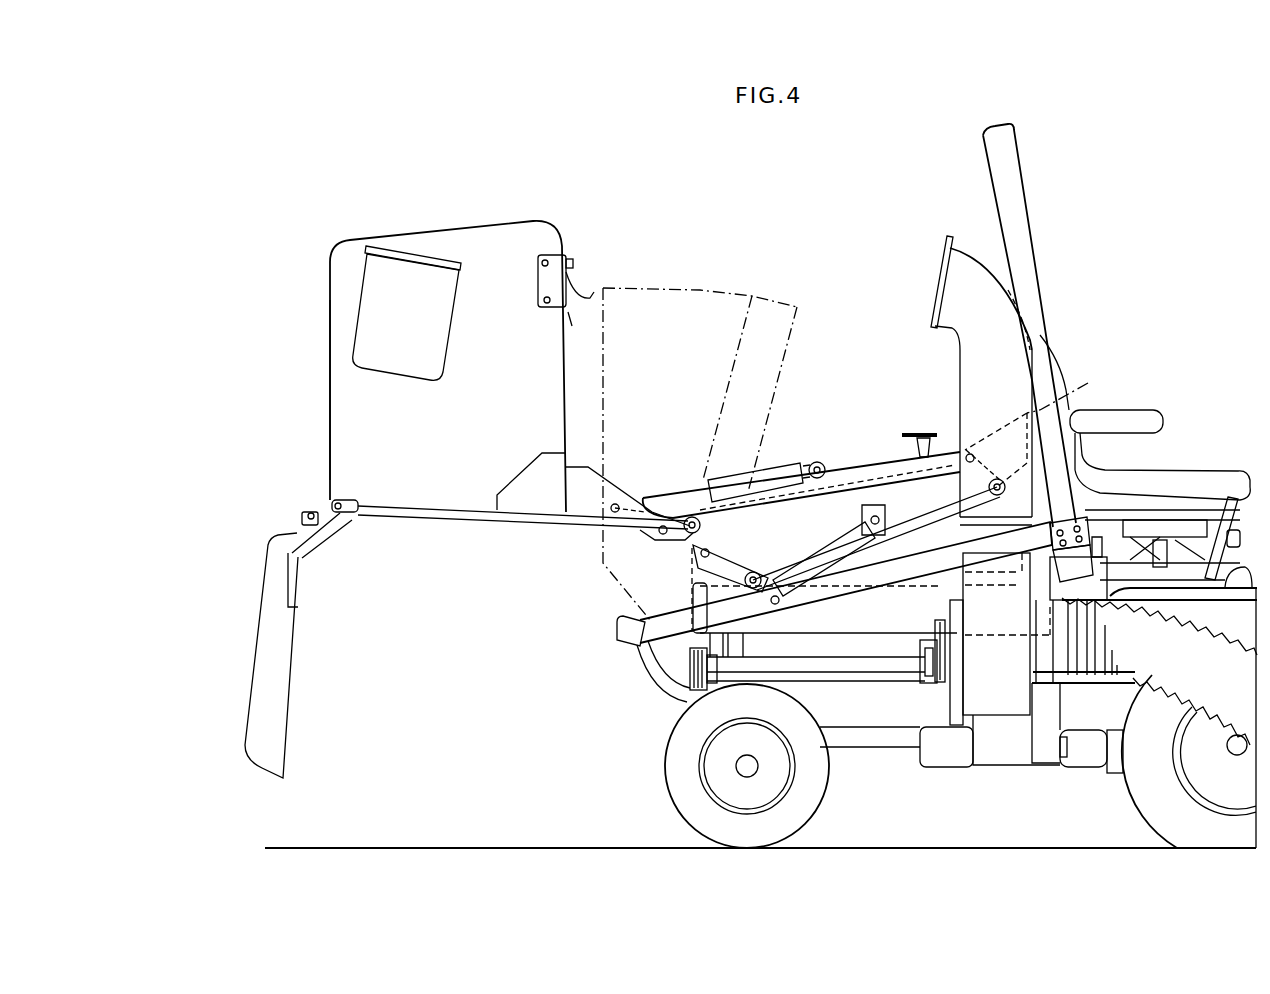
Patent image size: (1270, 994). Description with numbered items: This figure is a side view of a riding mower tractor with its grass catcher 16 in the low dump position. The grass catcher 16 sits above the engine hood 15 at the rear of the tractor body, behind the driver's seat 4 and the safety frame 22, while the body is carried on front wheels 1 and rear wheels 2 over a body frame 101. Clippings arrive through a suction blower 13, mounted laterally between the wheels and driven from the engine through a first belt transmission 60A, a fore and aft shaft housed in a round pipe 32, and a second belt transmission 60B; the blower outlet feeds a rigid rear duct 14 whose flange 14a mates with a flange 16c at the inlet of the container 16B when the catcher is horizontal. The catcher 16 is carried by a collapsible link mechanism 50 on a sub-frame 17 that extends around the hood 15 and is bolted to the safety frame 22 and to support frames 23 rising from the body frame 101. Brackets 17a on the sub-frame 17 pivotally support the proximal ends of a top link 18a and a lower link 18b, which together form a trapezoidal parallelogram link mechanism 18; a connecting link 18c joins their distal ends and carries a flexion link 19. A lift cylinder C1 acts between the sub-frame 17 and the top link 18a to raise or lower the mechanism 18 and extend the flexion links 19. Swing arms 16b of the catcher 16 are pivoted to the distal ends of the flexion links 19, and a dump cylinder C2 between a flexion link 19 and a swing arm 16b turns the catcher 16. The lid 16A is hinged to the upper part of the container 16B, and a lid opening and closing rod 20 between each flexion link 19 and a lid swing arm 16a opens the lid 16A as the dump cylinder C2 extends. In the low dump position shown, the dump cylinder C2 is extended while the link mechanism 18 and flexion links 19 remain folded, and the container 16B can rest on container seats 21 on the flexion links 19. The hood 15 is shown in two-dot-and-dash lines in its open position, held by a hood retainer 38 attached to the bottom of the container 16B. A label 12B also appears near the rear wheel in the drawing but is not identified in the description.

The front wheels 1 is at (1150, 806).
The rear wheels 2 is at (678, 802).
The driver's seat 4 is at (1185, 470).
The rear fender 12B is at (1172, 690).
The suction blower 13 is at (1005, 718).
The rear duct 14 is at (1022, 320).
The flange 14a is at (945, 262).
The engine hood 15 is at (701, 288).
The grass catcher 16 is at (333, 238).
The lid 16A is at (288, 700).
The container 16B is at (330, 410).
The lid swing arm 16a is at (316, 538).
The swing arms 16b is at (620, 493).
The flange 16c is at (403, 250).
The sub-frame 17 is at (625, 616).
The brackets 17a is at (691, 570).
The trapezoidal parallelogram link mechanism 18 is at (875, 548).
The top link 18a is at (830, 497).
The lower link 18b is at (917, 560).
The connecting link 18c is at (983, 450).
The flexion links 19 is at (776, 478).
The lid opening and closing rod 20 is at (435, 516).
The container seats 21 is at (918, 432).
The safety frame 22 is at (1020, 175).
The support frames 23 is at (663, 698).
The round pipe 32 is at (852, 672).
The hood retainer 38 is at (582, 290).
The collapsible link mechanism 50 is at (872, 478).
The first belt transmission 60A is at (686, 668).
The second belt transmission 60B is at (941, 700).
The body frame 101 is at (851, 727).
The lift cylinder C1 is at (828, 583).
The dump cylinder C2 is at (747, 468).